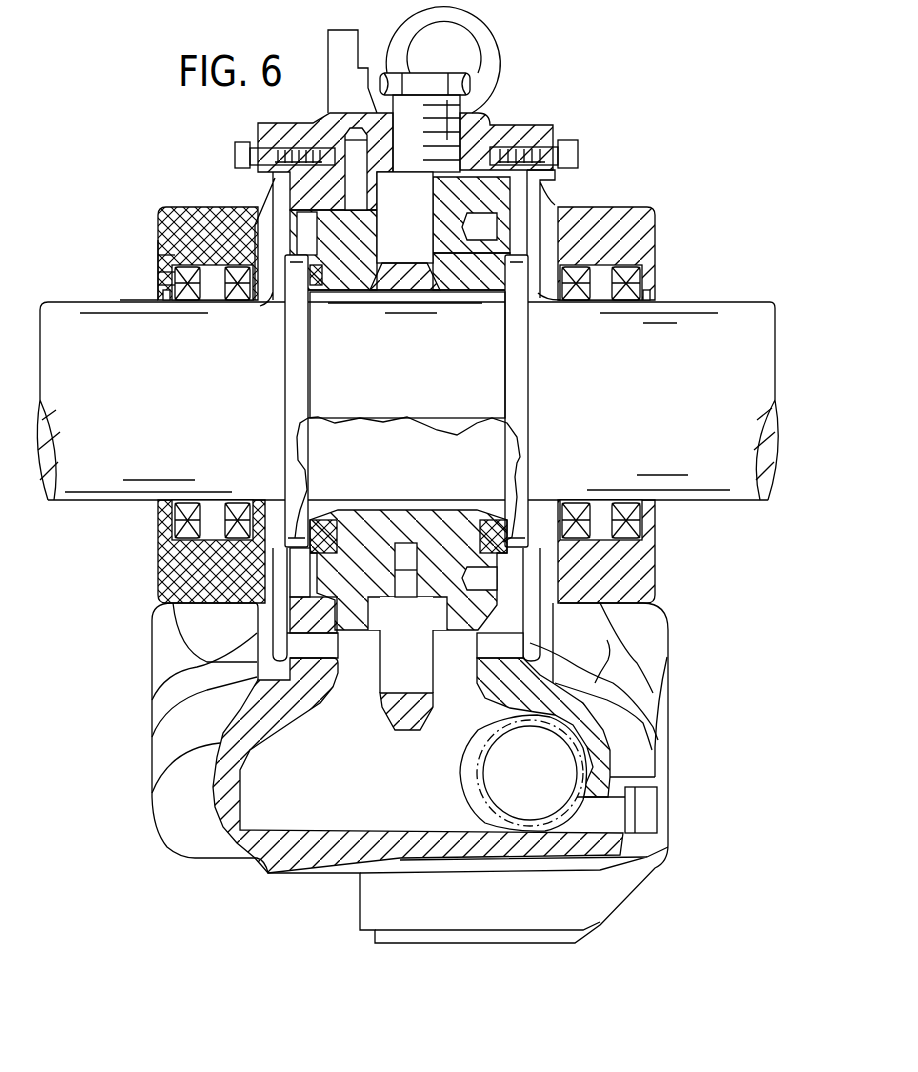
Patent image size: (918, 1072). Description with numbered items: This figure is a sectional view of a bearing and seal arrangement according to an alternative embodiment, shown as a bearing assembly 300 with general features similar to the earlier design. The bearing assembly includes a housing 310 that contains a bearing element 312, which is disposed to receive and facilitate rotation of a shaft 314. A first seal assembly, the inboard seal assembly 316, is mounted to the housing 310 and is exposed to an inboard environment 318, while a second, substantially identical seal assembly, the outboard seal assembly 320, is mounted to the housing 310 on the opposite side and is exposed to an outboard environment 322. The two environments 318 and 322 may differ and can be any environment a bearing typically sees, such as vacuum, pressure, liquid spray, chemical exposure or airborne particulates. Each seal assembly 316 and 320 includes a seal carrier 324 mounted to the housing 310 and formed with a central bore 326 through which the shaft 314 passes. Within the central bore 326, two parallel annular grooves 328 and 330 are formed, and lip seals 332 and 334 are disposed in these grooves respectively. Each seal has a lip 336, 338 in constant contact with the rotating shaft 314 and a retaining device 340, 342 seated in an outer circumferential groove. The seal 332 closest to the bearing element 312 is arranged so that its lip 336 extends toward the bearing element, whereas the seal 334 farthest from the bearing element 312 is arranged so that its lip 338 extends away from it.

The bearing assembly 300 is at (637, 140).
The housing 310 is at (213, 813).
The bearing element 312 is at (278, 592).
The shaft 314 is at (710, 301).
The inboard seal assembly 316 is at (162, 258).
The inboard environment 318 is at (76, 604).
The outboard seal assembly 320 is at (658, 575).
The outboard environment 322 is at (780, 674).
The seal carrier 324 is at (187, 207).
The central bore 326 is at (173, 212).
The annular groove 328 is at (211, 283).
The annular groove 330 is at (157, 248).
The lip seal 332 is at (167, 557).
The lip seal 334 is at (157, 287).
The lip 336 is at (238, 503).
The lip 338 is at (124, 302).
The retaining device 340 is at (190, 603).
The retaining device 342 is at (162, 277).